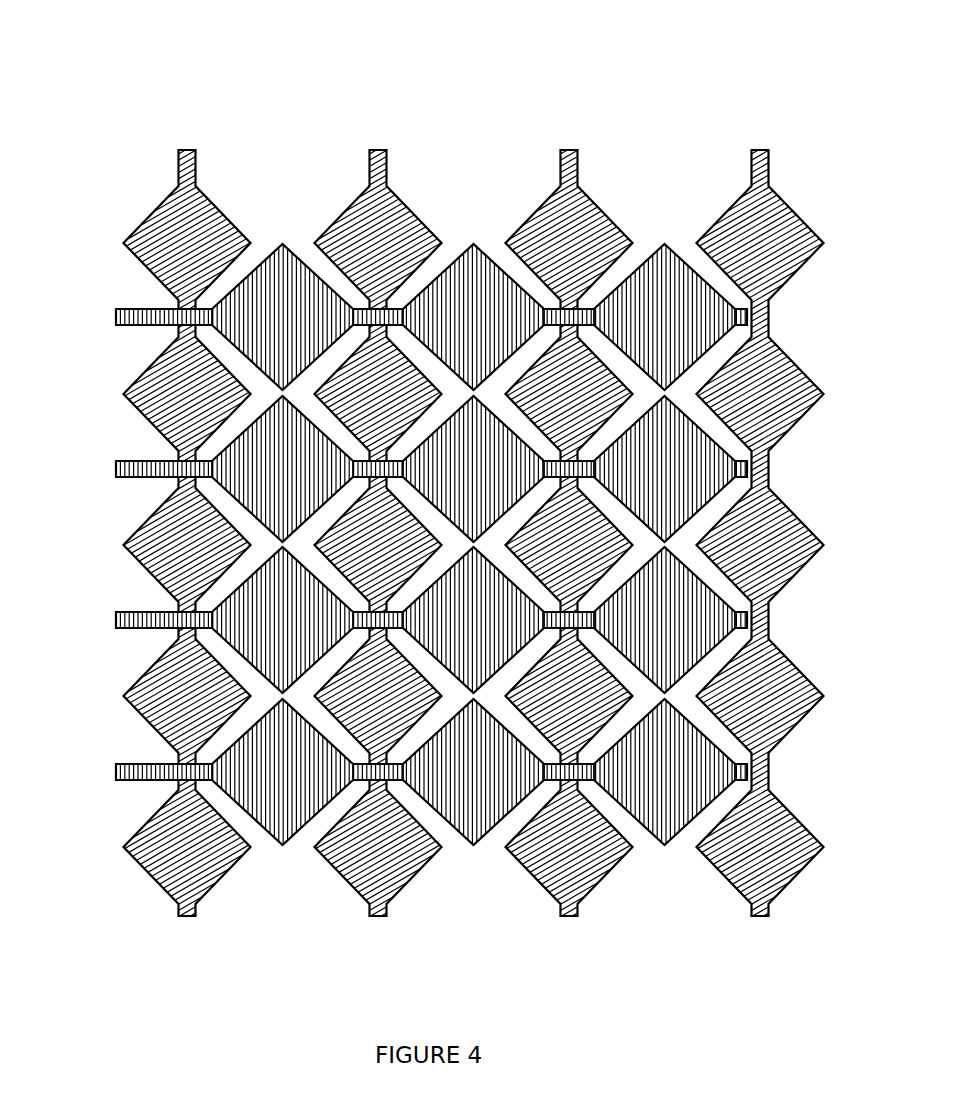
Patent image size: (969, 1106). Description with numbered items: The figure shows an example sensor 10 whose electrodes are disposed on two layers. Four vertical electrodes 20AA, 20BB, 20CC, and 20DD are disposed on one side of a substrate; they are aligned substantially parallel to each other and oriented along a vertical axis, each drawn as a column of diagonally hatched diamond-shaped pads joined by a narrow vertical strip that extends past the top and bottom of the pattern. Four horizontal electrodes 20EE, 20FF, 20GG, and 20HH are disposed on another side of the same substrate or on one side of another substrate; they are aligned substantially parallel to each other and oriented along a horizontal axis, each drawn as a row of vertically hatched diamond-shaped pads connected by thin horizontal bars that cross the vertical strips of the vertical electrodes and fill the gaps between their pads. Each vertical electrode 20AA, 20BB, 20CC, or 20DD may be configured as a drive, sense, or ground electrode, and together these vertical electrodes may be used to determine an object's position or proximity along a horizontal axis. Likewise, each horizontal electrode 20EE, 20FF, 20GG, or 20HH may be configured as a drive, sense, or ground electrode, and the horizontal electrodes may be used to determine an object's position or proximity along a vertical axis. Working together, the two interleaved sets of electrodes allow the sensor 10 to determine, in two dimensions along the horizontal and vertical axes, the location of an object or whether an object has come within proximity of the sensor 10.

The sensor 10 is at (85, 132).
The vertical electrode 20AA is at (228, 214).
The vertical electrode 20BB is at (418, 217).
The vertical electrode 20CC is at (608, 217).
The vertical electrode 20DD is at (793, 206).
The horizontal electrode 20EE is at (235, 283).
The horizontal electrode 20FF is at (238, 435).
The horizontal electrode 20GG is at (243, 582).
The horizontal electrode 20HH is at (245, 733).